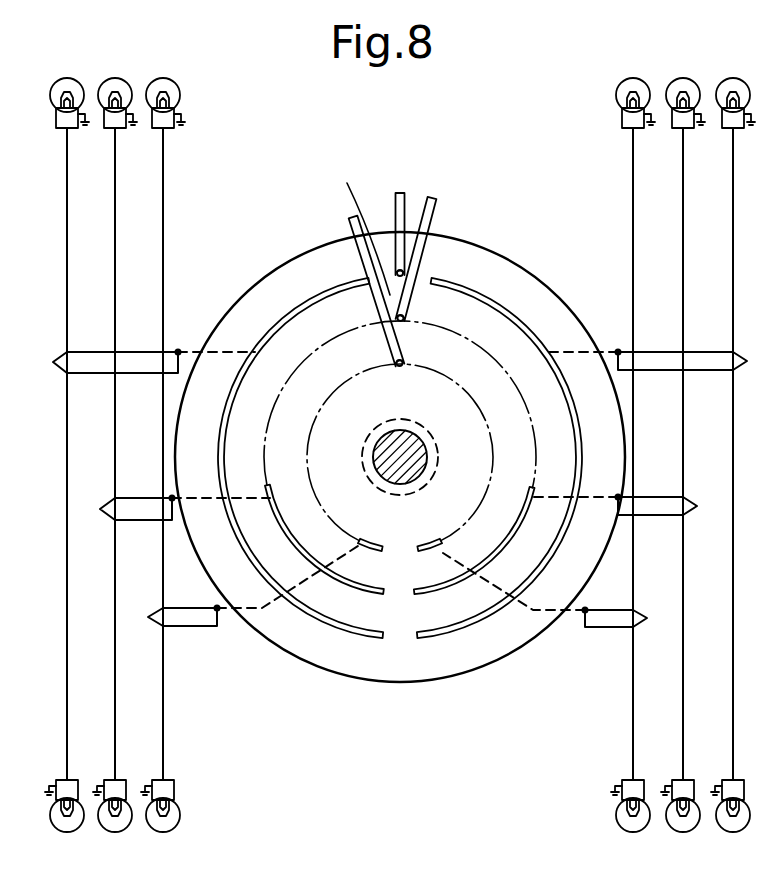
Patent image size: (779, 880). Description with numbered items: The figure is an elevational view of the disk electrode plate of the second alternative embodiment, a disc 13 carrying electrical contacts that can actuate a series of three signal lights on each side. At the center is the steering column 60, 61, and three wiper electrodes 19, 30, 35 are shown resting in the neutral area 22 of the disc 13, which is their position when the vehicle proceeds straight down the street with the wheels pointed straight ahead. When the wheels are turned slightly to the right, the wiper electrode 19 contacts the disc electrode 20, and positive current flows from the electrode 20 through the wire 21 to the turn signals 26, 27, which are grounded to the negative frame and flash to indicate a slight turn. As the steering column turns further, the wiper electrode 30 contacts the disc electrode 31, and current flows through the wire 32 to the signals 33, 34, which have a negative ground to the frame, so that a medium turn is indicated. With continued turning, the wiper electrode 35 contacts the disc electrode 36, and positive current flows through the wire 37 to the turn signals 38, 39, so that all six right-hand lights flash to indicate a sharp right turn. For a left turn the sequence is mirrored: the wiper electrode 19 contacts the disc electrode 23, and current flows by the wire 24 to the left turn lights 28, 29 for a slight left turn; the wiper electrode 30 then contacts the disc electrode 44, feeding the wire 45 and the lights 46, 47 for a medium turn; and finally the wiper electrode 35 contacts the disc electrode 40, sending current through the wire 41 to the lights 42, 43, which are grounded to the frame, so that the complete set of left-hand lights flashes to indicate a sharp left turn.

The disc 13 is at (504, 257).
The wiper electrode 19 is at (396, 200).
The disc electrode 20 is at (548, 348).
The wire 21 is at (659, 361).
The neutral area 22 is at (354, 232).
The disc electrode 23 is at (255, 345).
The wire 24 is at (142, 362).
The turn signal 26 is at (725, 80).
The turn signal 27 is at (725, 830).
The left turn light 28 is at (60, 80).
The left turn light 29 is at (58, 831).
The wiper electrode 30 is at (434, 206).
The disc electrode 31 is at (528, 489).
The wire 32 is at (626, 506).
The signal light 33 is at (674, 80).
The signal light 34 is at (675, 830).
The wiper electrode 35 is at (354, 222).
The disc electrode 36 is at (430, 540).
The wire 37 is at (558, 590).
The turn signal 38 is at (624, 80).
The turn signal 39 is at (625, 830).
The disc electrode 40 is at (374, 540).
The wire 41 is at (241, 587).
The light 42 is at (155, 830).
The light 43 is at (155, 80).
The disc electrode 44 is at (276, 492).
The wire 45 is at (173, 508).
The light 46 is at (107, 830).
The light 47 is at (108, 80).
The steering column 60 is at (420, 451).
The steering column 61 is at (428, 431).